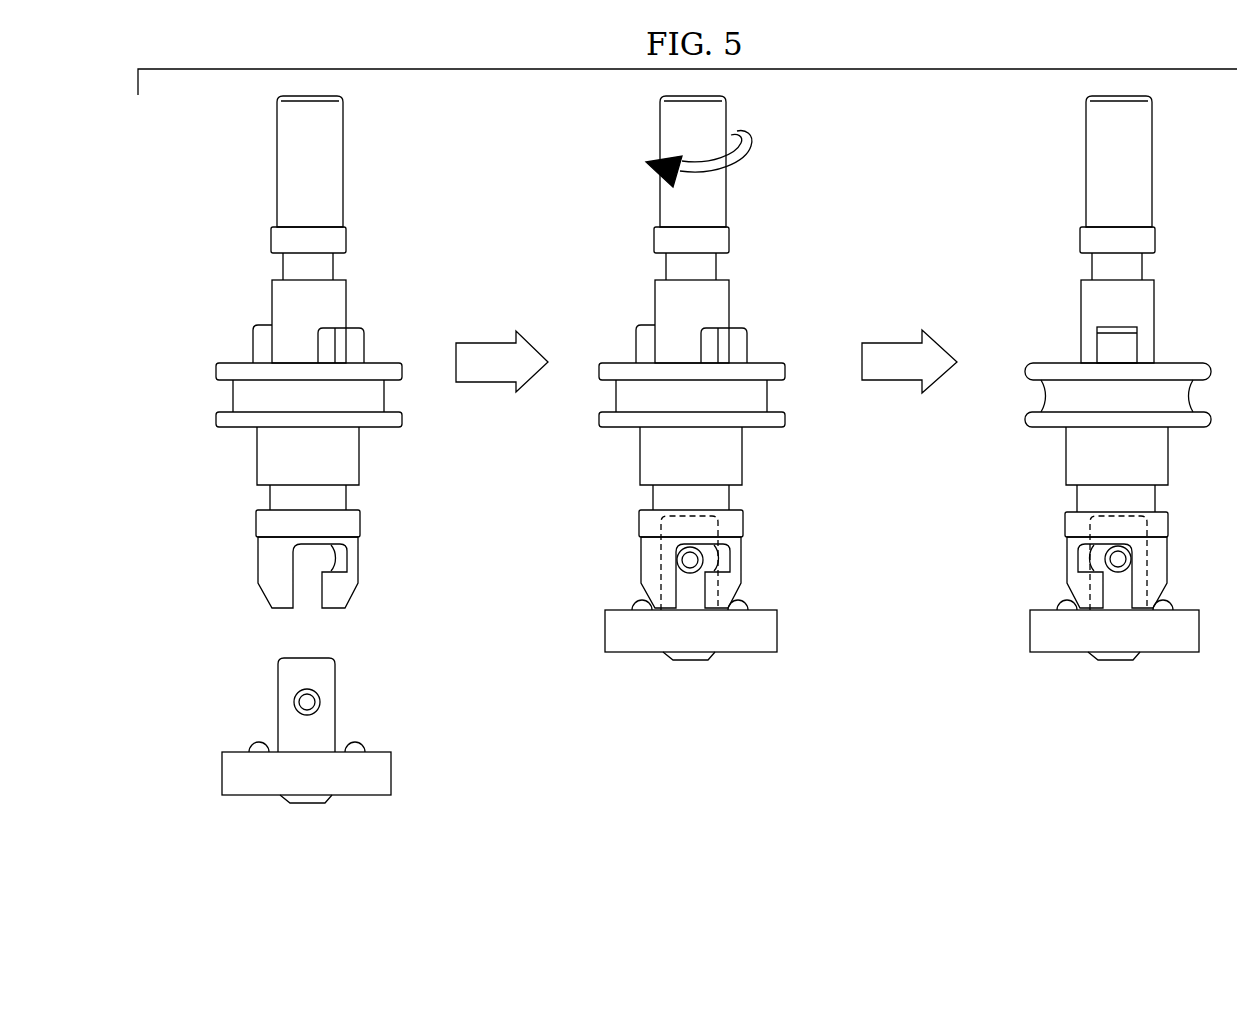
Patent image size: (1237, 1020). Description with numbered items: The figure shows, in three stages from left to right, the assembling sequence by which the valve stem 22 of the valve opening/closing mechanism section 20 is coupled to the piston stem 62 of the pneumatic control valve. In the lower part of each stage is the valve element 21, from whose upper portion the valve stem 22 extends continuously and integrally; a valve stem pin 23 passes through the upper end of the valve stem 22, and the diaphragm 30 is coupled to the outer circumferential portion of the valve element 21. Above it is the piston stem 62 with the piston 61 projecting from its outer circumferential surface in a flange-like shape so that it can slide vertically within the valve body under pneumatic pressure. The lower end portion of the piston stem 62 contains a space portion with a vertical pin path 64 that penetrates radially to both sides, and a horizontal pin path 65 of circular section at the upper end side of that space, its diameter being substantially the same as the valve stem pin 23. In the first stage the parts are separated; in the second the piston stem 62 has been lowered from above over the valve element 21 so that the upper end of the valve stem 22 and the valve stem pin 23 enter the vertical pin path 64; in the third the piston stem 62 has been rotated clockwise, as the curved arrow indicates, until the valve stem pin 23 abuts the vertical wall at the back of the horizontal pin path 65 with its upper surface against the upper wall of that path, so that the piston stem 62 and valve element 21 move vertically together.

The valve opening/closing mechanism section 20 is at (207, 787).
The valve element 21 is at (328, 798).
The valve stem 22 is at (332, 660).
The valve stem pin 23 is at (302, 702).
The diaphragm 30 is at (354, 747).
The piston 61 is at (384, 361).
The piston stem 62 is at (333, 142).
The vertical pin path 64 is at (305, 600).
The horizontal pin path 65 is at (341, 552).